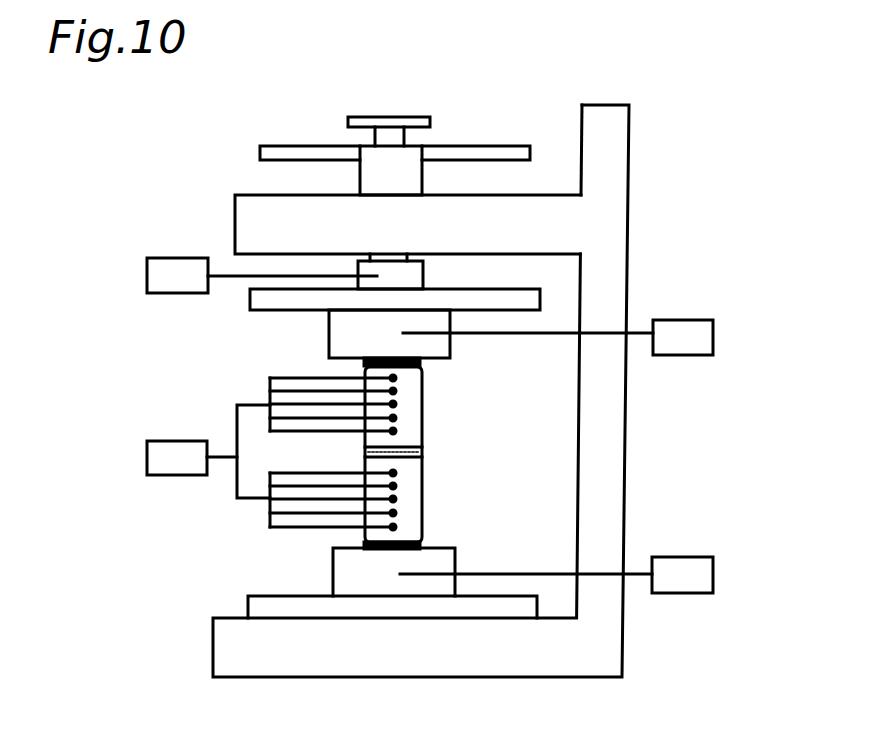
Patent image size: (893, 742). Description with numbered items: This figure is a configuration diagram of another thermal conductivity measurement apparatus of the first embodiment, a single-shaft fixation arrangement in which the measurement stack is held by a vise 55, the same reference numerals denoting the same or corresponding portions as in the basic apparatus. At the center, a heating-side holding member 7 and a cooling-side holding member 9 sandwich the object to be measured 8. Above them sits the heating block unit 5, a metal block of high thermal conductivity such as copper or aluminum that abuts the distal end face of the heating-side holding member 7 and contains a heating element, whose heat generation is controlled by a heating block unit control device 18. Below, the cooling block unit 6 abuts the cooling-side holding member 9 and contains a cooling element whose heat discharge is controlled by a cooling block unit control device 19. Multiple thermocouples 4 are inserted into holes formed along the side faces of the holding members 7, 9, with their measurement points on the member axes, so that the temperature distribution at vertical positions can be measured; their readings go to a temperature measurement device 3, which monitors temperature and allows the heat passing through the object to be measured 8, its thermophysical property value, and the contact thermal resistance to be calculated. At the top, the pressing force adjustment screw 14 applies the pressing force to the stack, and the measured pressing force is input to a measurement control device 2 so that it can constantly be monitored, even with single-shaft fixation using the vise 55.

The measurement control device 2 is at (157, 271).
The temperature measurement device 3 is at (175, 448).
The thermocouples 4 is at (235, 493).
The heating block unit 5 is at (329, 347).
The cooling block unit 6 is at (343, 566).
The heating-side holding member 7 is at (424, 412).
The object to be measured 8 is at (421, 448).
The cooling-side holding member 9 is at (417, 497).
The pressing force adjustment screw 14 is at (394, 171).
The heating block unit control device 18 is at (683, 330).
The cooling block unit control device 19 is at (677, 567).
The vise 55 is at (603, 267).